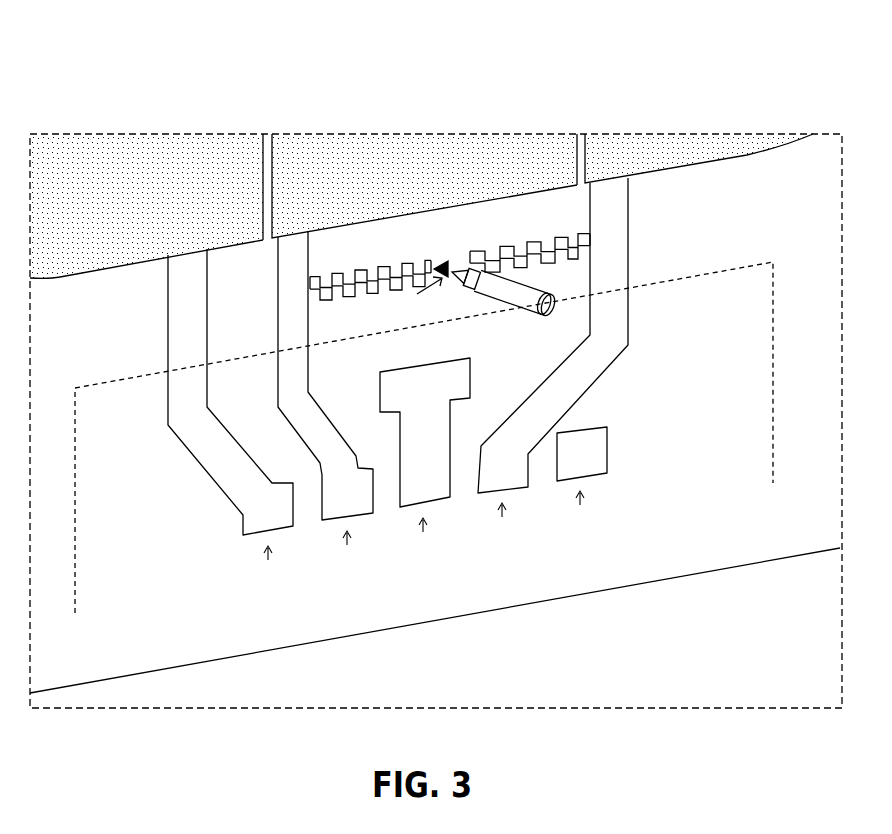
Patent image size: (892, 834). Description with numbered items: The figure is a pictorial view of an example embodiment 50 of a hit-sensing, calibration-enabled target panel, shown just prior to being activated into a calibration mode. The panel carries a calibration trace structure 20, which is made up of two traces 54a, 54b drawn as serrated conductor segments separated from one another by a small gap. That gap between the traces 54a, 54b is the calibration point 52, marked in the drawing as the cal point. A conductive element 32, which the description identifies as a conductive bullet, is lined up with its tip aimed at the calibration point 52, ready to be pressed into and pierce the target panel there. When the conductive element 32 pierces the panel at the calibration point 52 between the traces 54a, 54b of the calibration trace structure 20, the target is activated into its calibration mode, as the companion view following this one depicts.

The example embodiment of hit-sensing calibration-enabled target 50 is at (144, 70).
The calibration trace structure 20 is at (487, 240).
The conductive element 32 is at (458, 272).
The calibration point 52 is at (456, 266).
The trace 54a is at (350, 275).
The trace 54b is at (540, 239).